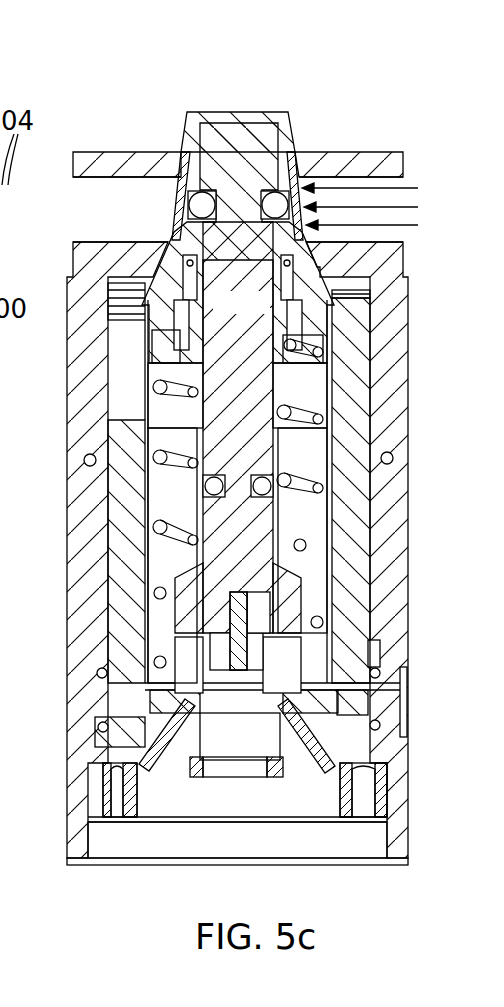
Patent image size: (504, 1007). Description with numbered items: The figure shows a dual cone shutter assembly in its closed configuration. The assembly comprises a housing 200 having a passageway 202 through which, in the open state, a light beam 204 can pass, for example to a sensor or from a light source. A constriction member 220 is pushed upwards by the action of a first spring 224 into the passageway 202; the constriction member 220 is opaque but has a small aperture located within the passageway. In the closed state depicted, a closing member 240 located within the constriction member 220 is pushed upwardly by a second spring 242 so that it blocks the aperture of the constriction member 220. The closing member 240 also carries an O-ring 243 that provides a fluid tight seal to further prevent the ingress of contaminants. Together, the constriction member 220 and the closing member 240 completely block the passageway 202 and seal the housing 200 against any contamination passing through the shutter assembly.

The housing 200 is at (408, 318).
The passageway 202 is at (144, 221).
The light beam 204 is at (420, 225).
The constriction member 220 is at (243, 128).
The first spring 224 is at (152, 520).
The closing member 240 is at (265, 318).
The second spring 242 is at (300, 357).
The O-ring 243 is at (300, 195).